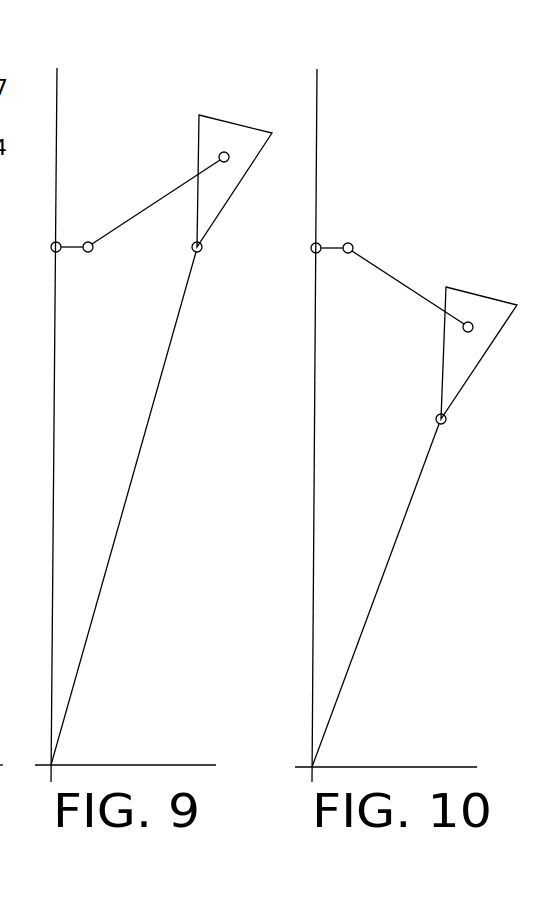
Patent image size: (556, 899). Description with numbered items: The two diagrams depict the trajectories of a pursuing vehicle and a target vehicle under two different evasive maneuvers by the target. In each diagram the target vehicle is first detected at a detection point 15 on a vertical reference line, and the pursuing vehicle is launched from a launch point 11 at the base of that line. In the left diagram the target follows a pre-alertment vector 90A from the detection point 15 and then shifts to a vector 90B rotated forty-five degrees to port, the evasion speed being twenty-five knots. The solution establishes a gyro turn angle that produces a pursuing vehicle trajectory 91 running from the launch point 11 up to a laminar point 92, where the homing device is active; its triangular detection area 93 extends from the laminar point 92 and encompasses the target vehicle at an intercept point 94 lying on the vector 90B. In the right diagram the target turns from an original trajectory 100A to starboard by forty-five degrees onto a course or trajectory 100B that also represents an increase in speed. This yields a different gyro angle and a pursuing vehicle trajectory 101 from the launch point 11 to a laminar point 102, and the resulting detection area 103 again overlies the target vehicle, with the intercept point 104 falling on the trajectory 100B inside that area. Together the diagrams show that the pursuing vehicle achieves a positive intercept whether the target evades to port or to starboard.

In FIG. 9, the launch point 11 is at (51, 765).
In FIG. 10, the launch point 11 is at (312, 766).
In FIG. 9, the detection point 15 is at (54, 242).
In FIG. 10, the detection point 15 is at (314, 246).
In FIG. 9, the pre-alertment vector 90A is at (69, 243).
In FIG. 9, the vector 90B is at (134, 224).
In FIG. 9, the pursuing vehicle trajectory 91 is at (135, 472).
In FIG. 9, the laminar point 92 is at (201, 250).
In FIG. 9, the detection area 93 is at (232, 133).
In FIG. 9, the intercept point 94 is at (230, 158).
In FIG. 10, the original trajectory 100A is at (328, 243).
In FIG. 10, the course or trajectory 100B is at (396, 280).
In FIG. 10, the pursuing vehicle trajectory 101 is at (402, 525).
In FIG. 10, the laminar point 102 is at (447, 423).
In FIG. 10, the detection area 103 is at (477, 300).
In FIG. 10, the intercept point 104 is at (477, 330).